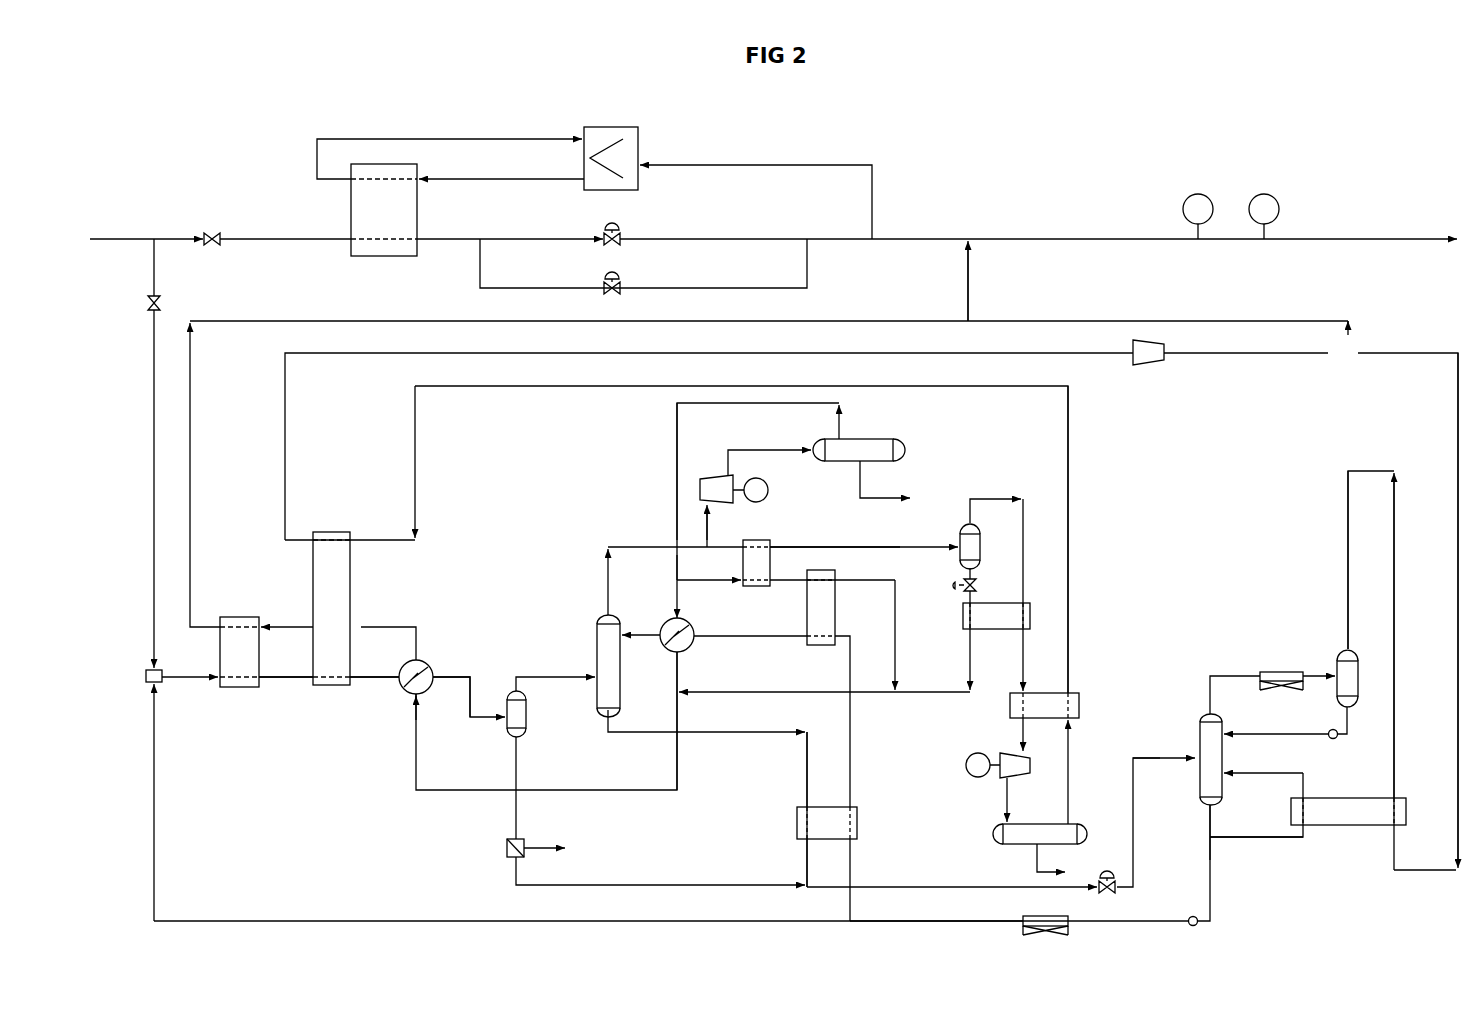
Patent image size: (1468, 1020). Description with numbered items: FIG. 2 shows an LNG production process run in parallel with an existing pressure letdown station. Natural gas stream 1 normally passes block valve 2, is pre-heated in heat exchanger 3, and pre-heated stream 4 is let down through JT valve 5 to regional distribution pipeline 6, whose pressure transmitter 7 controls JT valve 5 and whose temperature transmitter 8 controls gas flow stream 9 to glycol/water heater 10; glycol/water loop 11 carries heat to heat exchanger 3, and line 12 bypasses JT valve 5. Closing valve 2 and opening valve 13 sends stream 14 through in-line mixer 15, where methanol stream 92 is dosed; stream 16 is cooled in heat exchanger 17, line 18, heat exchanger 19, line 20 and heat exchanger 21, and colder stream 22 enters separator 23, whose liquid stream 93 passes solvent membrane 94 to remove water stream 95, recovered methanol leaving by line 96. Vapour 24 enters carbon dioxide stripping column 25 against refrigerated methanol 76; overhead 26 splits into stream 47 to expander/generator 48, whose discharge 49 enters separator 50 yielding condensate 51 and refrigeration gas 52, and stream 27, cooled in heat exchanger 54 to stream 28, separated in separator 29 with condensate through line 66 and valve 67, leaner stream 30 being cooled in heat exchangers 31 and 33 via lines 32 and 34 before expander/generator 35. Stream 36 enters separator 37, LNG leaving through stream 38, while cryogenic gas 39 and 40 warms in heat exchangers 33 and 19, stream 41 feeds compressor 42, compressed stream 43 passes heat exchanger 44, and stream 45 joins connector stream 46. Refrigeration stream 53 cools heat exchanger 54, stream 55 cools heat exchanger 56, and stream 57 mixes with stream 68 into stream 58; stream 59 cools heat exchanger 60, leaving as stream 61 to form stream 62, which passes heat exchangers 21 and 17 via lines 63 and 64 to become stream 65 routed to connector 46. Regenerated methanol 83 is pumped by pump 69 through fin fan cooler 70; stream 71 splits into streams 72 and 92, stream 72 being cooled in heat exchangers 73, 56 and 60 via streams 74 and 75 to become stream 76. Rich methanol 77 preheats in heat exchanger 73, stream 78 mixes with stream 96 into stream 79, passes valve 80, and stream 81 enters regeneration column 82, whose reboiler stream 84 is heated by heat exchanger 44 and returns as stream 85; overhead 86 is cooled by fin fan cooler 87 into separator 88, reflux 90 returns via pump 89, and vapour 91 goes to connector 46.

The natural gas stream 1 is at (122, 245).
The block valve 2 is at (210, 248).
The heat exchanger 3 is at (372, 262).
The pre-heated gas stream 4 is at (462, 247).
The JT valve 5 is at (600, 231).
The regional distribution pipeline 6 is at (902, 247).
The pressure transmitter 7 is at (1180, 204).
The temperature transmitter 8 is at (1246, 204).
The gas flow stream 9 is at (866, 207).
The glycol/water heater 10 is at (646, 147).
The closed loop recycling glycol/water 11 is at (483, 185).
The bypass line 12 is at (546, 280).
The valve 13 is at (144, 312).
The natural gas stream 14 is at (146, 495).
The in-line mixer 15 is at (144, 680).
The hydrate inhibited stream 16 is at (186, 699).
The heat exchanger 17 is at (236, 697).
The line 18 is at (283, 695).
The heat exchanger 19 is at (316, 697).
The line 20 is at (370, 688).
The heat exchanger 21 is at (404, 694).
The colder gas stream 22 is at (463, 695).
The gas/liquid separator 23 is at (502, 732).
The vapour fraction 24 is at (524, 672).
The carbon dioxide stripping column 25 is at (590, 702).
The overhead stream 26 is at (604, 600).
The pre-treated gaseous stream 27 is at (735, 555).
The cooler gas stream 28 is at (843, 545).
The separator 29 is at (984, 553).
The leaner gas stream 30 is at (1000, 492).
The heat exchanger 31 is at (1033, 612).
The line 32 is at (1030, 655).
The heat exchanger 33 is at (1005, 706).
The line 34 is at (1030, 738).
The second gas expander/generator 35 is at (1018, 780).
The pressure reduced stream 36 is at (1002, 793).
The separator 37 is at (986, 838).
The stream 38 is at (1032, 856).
The cryogenic gaseous stream 39 is at (1076, 774).
The line 40 is at (1075, 508).
The gas stream 41 is at (295, 410).
The compressor 42 is at (1147, 376).
The compressed and heated gas stream 43 is at (1446, 410).
The heat exchanger 44 is at (1408, 800).
The stream 45 is at (1405, 670).
The connector gas stream 46 is at (975, 290).
The stream 47 is at (718, 540).
The pressure reducing gas expander/generator 48 is at (712, 470).
The colder gas stream 49 is at (740, 445).
The separator 50 is at (878, 430).
The condensate fraction 51 is at (855, 484).
The gaseous stream 52 is at (668, 435).
The natural gas refrigeration stream 53 is at (695, 592).
The heat exchanger 54 is at (757, 598).
The natural gas refrigeration stream 55 is at (792, 590).
The heat exchanger 56 is at (845, 600).
The stream 57 is at (907, 637).
The stream 58 is at (876, 710).
The natural gas refrigeration stream 59 is at (670, 592).
The heat exchanger 60 is at (700, 660).
The refrigerated stream 61 is at (670, 670).
The natural gas refrigeration stream 62 is at (683, 776).
The line 63 is at (425, 645).
The line 64 is at (282, 620).
The heat recovery gas stream 65 is at (196, 514).
The line 66 is at (945, 585).
The valve 67 is at (978, 595).
The stream 68 is at (962, 650).
The pump 69 is at (1186, 934).
The ambient air fin fan heat exchanger 70 is at (1014, 936).
The regenerated pre-cooled methanol stream 71 is at (916, 926).
The regenerated methanol stream 72 is at (860, 870).
The heat exchanger 73 is at (868, 826).
The stream 74 is at (858, 784).
The stream 75 is at (785, 648).
The refrigerated methanol stream 76 is at (633, 628).
The rich methanol stream 77 is at (793, 758).
The preheated rich methanol stream 78 is at (795, 862).
The methanol rich stream 79 is at (895, 884).
The pressure reduction valve 80 is at (1107, 864).
The stream 81 is at (1147, 752).
The methanol regeneration column 82 is at (1186, 782).
The regenerated methanol stream 83 is at (1200, 832).
The reboiler stream 84 is at (1237, 830).
The stream 85 is at (1270, 768).
The overhead stream 86 is at (1216, 670).
The ambient air fin fan heat exchanger 87 is at (1272, 666).
The separator 88 is at (1336, 641).
The pump 89 is at (1338, 748).
The reflux stream 90 is at (1255, 728).
The vapour stream 91 is at (1336, 500).
The regenerated methanol stream 92 is at (167, 808).
The stream 93 is at (527, 784).
The solvent membrane 94 is at (502, 853).
The water stream 95 is at (553, 841).
The line 96 is at (690, 881).